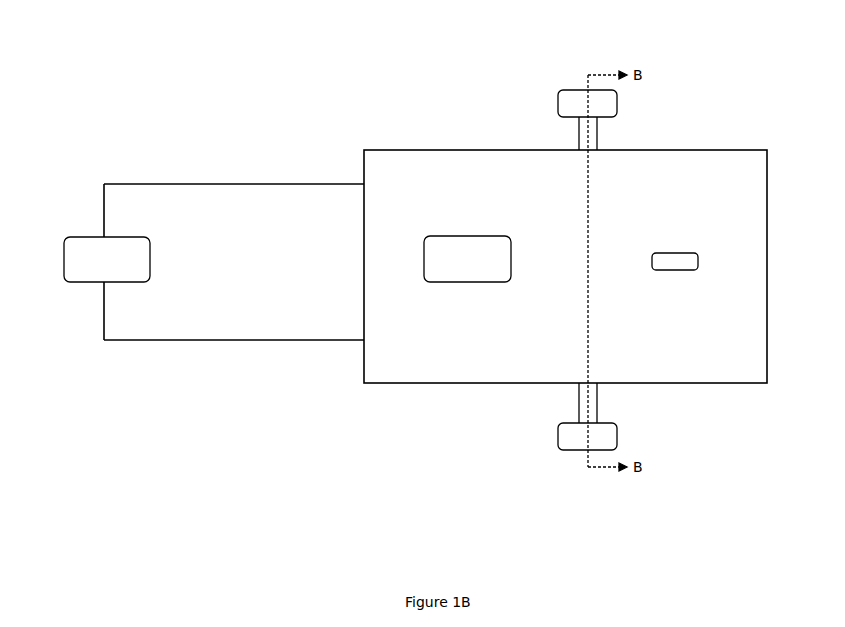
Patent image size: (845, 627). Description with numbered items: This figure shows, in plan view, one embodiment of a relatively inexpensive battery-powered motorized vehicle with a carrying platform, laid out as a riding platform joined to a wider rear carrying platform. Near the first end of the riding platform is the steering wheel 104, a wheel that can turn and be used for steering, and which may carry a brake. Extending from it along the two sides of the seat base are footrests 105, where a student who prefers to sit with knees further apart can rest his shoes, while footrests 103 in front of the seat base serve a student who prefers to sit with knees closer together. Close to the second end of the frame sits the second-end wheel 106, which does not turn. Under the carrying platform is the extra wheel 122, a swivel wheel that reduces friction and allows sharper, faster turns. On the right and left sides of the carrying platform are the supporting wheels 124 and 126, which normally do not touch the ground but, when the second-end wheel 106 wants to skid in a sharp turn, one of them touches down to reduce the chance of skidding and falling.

The footrests 103 is at (117, 205).
The steering wheel 104 is at (64, 242).
The footrests 105 is at (192, 198).
The second-end wheel 106 is at (447, 258).
The extra wheel 122 is at (675, 261).
The supporting wheel 124 is at (573, 86).
The supporting wheel 126 is at (544, 440).